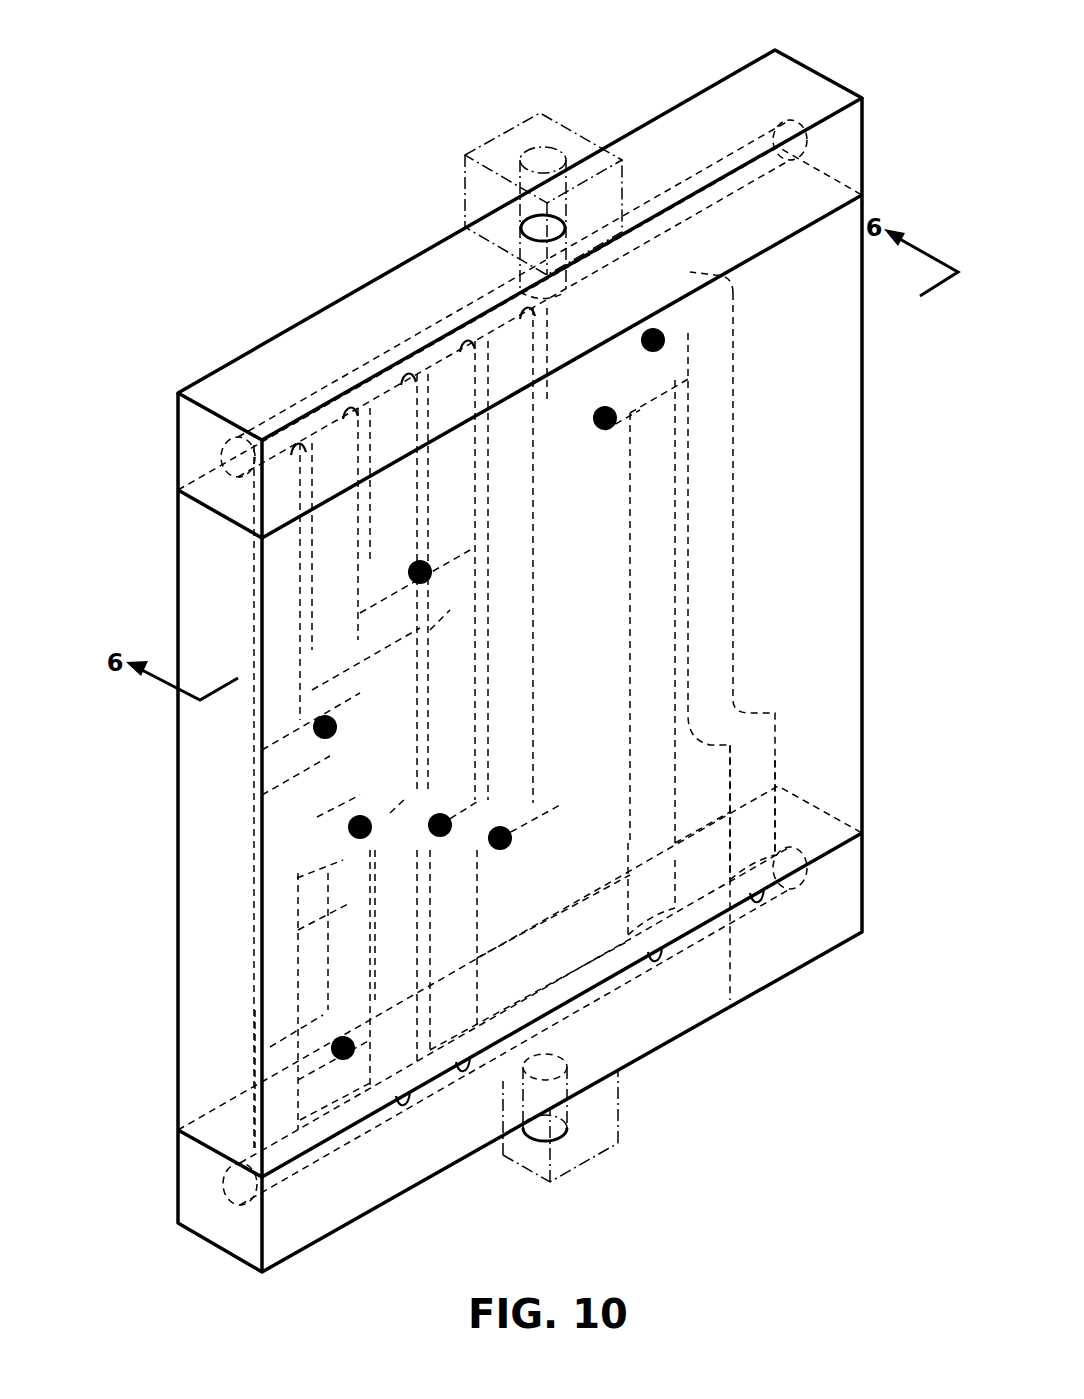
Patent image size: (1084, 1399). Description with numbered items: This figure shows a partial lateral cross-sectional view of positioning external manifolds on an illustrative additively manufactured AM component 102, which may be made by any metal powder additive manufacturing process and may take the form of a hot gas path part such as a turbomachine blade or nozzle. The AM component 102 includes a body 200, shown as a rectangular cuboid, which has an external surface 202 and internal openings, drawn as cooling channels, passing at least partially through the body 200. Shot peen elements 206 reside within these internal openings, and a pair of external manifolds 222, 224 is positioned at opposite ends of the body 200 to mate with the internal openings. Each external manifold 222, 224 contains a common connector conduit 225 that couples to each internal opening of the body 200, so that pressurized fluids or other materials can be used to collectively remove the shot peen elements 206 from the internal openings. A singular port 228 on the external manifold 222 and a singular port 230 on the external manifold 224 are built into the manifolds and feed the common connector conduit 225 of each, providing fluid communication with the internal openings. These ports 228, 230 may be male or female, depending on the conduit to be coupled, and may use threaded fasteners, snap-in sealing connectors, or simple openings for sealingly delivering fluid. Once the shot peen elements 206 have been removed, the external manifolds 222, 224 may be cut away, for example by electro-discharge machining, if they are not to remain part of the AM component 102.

The AM component 102 is at (667, 94).
The body 200 is at (215, 1019).
The external surface 202 is at (176, 855).
The shot peen element 206 is at (664, 348).
The external manifold 222 is at (209, 394).
The external manifold 224 is at (236, 1216).
The common connector conduit 225 is at (460, 322).
The port 228 is at (512, 134).
The port 230 is at (590, 1158).